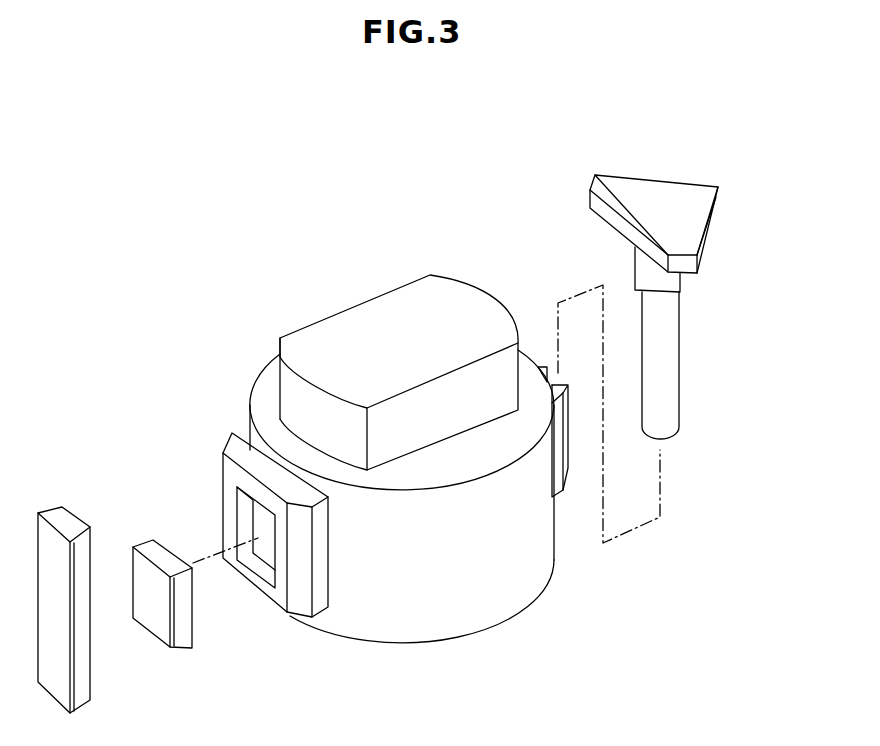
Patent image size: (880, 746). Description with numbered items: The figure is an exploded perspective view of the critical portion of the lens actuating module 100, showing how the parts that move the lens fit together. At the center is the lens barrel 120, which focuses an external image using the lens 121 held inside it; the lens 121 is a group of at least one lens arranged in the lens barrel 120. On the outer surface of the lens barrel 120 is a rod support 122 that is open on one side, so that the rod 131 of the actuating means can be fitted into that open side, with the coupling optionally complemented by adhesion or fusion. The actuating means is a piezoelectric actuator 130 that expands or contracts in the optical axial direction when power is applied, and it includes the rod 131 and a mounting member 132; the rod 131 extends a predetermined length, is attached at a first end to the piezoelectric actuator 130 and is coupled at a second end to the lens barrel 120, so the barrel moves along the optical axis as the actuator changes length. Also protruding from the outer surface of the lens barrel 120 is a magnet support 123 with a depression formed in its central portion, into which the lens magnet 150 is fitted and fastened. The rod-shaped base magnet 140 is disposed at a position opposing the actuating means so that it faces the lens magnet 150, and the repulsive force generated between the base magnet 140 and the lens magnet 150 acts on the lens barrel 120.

The lens actuating module 100 is at (193, 300).
The lens barrel 120 is at (510, 583).
The lens 121 is at (382, 307).
The rod support 122 is at (563, 467).
The magnet support 123 is at (277, 595).
The piezoelectric actuator 130 is at (667, 280).
The rod 131 is at (667, 393).
The mounting member 132 is at (663, 195).
The base magnet 140 is at (55, 515).
The lens magnet 150 is at (160, 553).